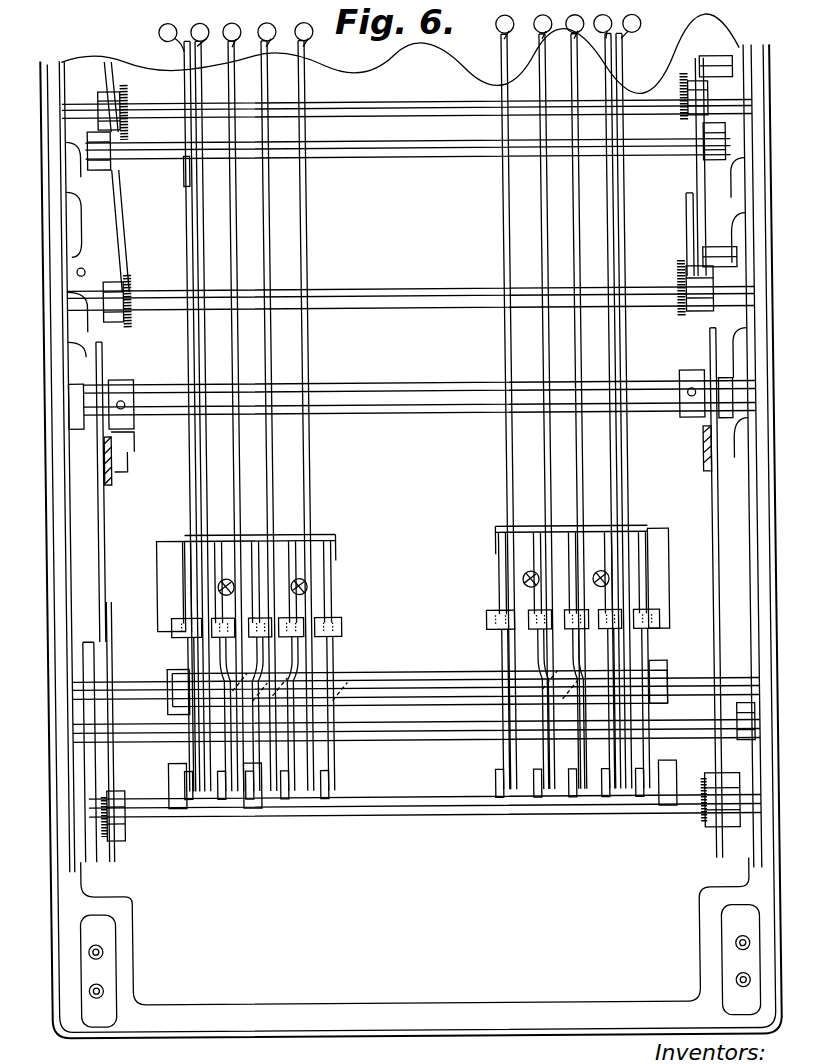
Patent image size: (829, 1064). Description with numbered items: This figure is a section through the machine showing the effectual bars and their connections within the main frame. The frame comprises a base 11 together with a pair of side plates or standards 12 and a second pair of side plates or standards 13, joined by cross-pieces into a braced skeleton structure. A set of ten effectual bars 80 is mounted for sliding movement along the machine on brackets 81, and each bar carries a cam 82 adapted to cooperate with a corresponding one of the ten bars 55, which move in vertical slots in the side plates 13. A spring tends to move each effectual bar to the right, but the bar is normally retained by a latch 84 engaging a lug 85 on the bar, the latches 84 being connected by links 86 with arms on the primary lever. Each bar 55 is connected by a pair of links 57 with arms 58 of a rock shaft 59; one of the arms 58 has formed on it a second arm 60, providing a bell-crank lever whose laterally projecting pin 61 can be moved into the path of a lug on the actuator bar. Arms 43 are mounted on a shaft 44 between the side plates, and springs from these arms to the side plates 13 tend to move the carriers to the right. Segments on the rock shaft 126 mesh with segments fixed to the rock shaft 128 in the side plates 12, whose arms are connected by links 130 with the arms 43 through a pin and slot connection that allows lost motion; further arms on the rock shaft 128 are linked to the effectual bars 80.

The base 11 is at (382, 1025).
The side plates or standards 12 is at (718, 460).
The side plates or standards 13 is at (62, 215).
The arms 43 is at (113, 458).
The shaft 44 is at (405, 383).
The bars 55 is at (405, 101).
The links 57 is at (134, 102).
The arms 58 is at (121, 222).
The rock shaft 59 is at (400, 158).
The arm 60 is at (700, 213).
The pin 61 is at (716, 58).
The effectual bars 80 is at (273, 226).
The brackets 81 is at (322, 538).
The cam 82 is at (188, 178).
The latch 84 is at (233, 592).
The lug 85 is at (250, 640).
The links 86 is at (290, 800).
The rock shaft 126 is at (375, 742).
The rock shaft 128 is at (368, 816).
The links 130 is at (104, 506).